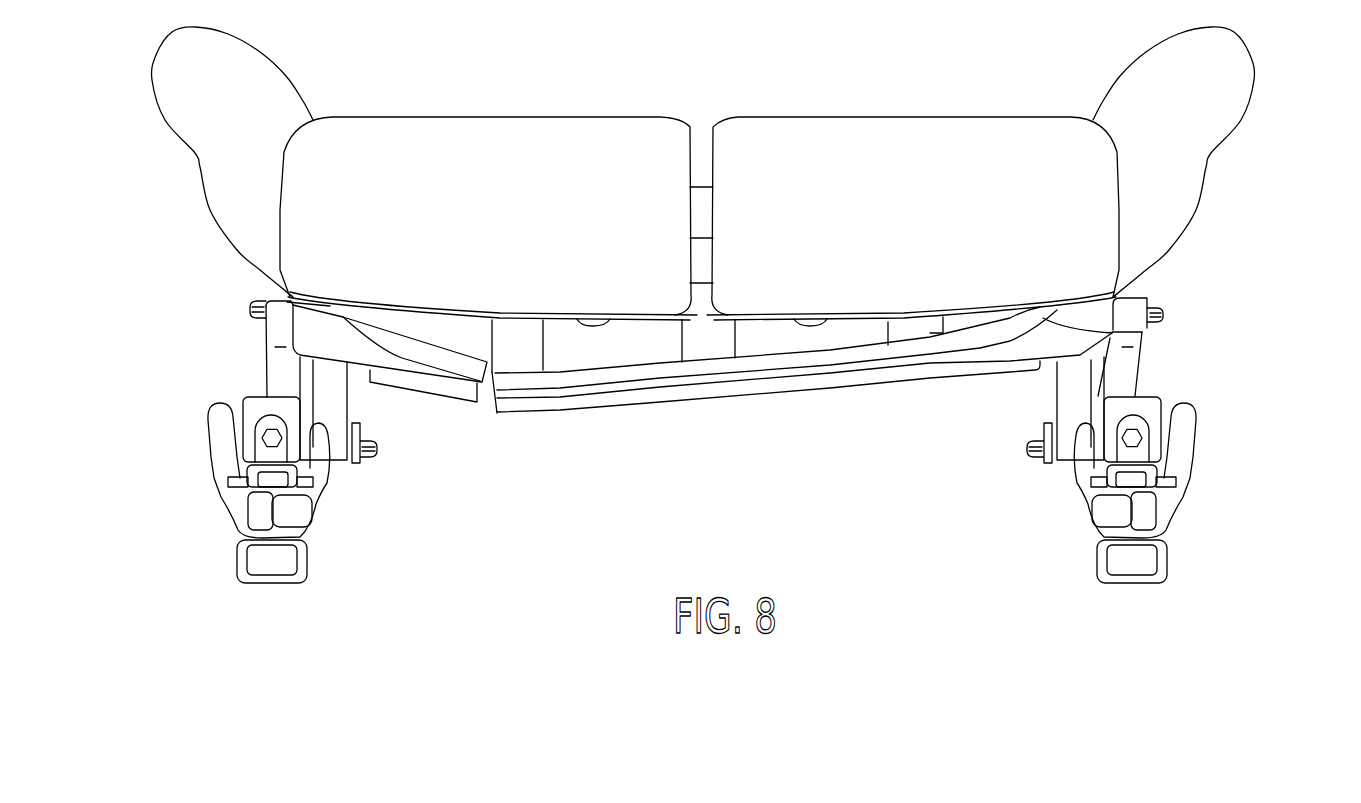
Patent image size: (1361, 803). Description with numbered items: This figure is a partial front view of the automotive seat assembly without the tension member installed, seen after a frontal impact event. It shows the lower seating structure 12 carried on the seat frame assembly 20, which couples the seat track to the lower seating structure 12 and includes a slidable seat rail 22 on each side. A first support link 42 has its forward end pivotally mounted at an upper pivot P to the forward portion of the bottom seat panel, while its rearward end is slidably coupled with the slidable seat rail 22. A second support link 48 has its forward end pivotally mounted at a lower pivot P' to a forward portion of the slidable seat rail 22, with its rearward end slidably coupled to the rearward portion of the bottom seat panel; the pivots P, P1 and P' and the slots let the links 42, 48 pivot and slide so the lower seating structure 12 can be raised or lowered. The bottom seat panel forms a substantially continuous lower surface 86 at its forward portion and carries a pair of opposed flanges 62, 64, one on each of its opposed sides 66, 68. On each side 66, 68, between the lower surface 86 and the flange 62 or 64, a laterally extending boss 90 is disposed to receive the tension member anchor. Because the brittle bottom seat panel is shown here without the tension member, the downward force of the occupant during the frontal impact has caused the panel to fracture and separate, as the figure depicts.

The lower seating structure 12 is at (830, 132).
The seat frame assembly 20 is at (260, 513).
The slidable seat rail 22 is at (313, 480).
The first support link 42 is at (280, 366).
The second support link 48 is at (333, 392).
The opposed flange 62 is at (262, 322).
The opposed flange 64 is at (1123, 343).
The opposed side 66 is at (178, 80).
The opposed side 68 is at (1228, 88).
The substantially continuous lower surface 86 is at (898, 368).
The laterally extending boss 90 is at (325, 333).
The upper pivot P is at (704, 278).
The pivot bolt P1 is at (380, 447).
The lower pivot P' is at (1024, 479).